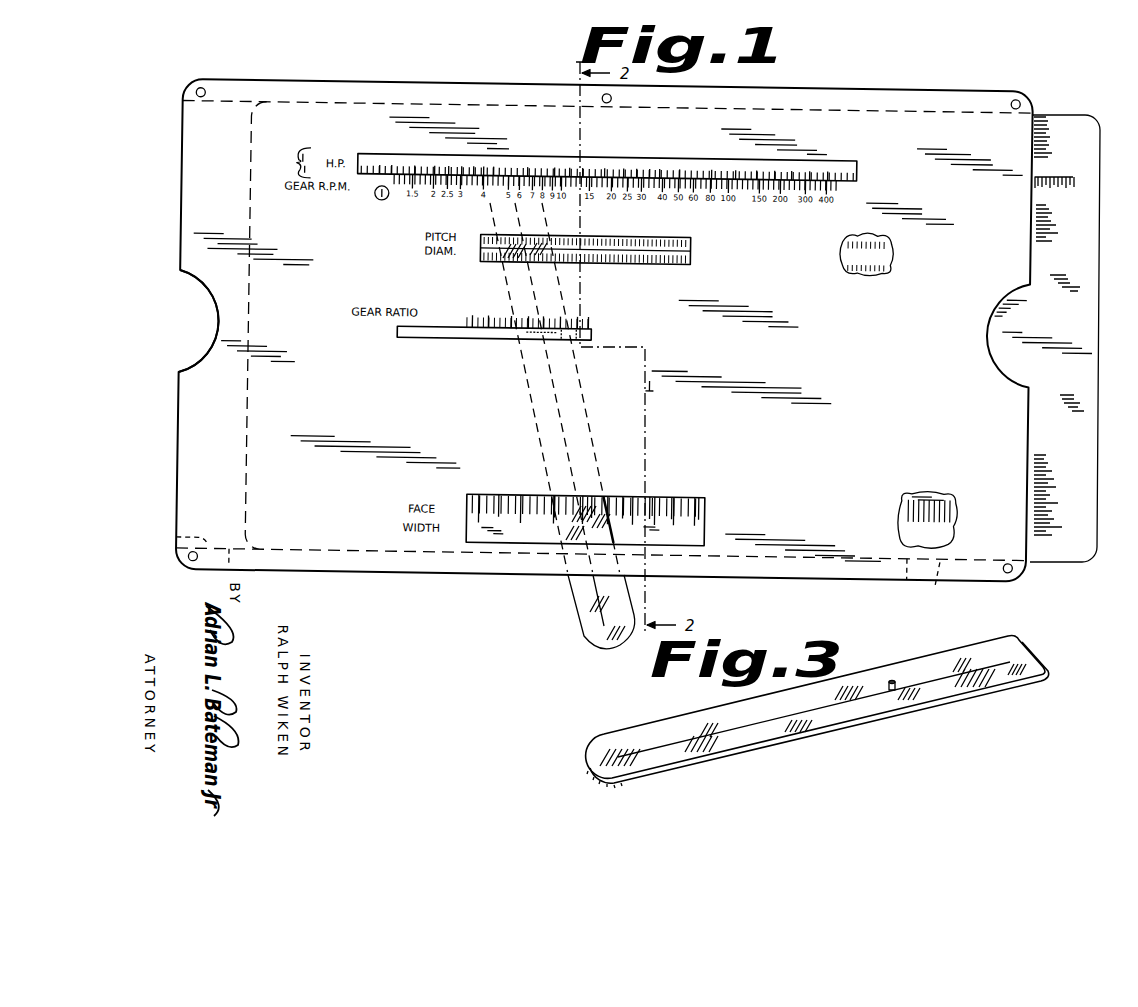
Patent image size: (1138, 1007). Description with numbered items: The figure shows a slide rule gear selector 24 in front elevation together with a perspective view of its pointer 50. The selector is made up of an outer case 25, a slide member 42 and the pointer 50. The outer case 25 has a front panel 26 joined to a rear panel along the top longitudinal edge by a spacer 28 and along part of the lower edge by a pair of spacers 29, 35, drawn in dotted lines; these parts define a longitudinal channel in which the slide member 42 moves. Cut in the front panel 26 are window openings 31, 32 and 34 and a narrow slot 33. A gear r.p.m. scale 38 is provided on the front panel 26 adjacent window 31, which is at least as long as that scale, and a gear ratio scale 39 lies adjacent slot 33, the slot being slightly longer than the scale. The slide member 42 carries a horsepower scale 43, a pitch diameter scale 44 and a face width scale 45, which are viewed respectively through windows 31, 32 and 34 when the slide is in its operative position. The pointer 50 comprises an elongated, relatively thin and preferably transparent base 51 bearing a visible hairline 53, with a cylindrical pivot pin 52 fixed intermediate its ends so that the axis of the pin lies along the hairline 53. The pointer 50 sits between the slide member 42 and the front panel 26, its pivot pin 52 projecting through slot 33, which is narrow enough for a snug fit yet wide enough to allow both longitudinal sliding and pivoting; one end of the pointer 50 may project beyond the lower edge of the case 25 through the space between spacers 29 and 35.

In FIG. 1, the slide rule gear selector 24 is at (362, 569).
In FIG. 1, the outer case 25 is at (184, 507).
In FIG. 1, the front panel 26 is at (721, 336).
In FIG. 1, the spacer 28 is at (381, 89).
In FIG. 1, the spacer 29 is at (186, 546).
In FIG. 1, the window opening 31 is at (387, 151).
In FIG. 1, the window opening 32 is at (652, 231).
In FIG. 1, the narrow slot 33 is at (431, 334).
In FIG. 1, the window opening 34 is at (512, 491).
In FIG. 1, the spacer 35 is at (940, 576).
In FIG. 1, the gear r.p.m. scale 38 is at (376, 190).
In FIG. 1, the gear ratio scale 39 is at (468, 318).
In FIG. 1, the slide member 42 is at (1088, 441).
In FIG. 1, the horsepower scale 43 is at (1076, 176).
In FIG. 1, the pitch diameter scale 44 is at (893, 238).
In FIG. 1, the face width scale 45 is at (946, 486).
In FIG. 1, the pointer 50 is at (582, 594).
In FIG. 3, the pointer 50 is at (817, 706).
In FIG. 3, the base 51 is at (944, 692).
In FIG. 3, the pivot pin 52 is at (883, 666).
In FIG. 3, the hairline 53 is at (671, 745).